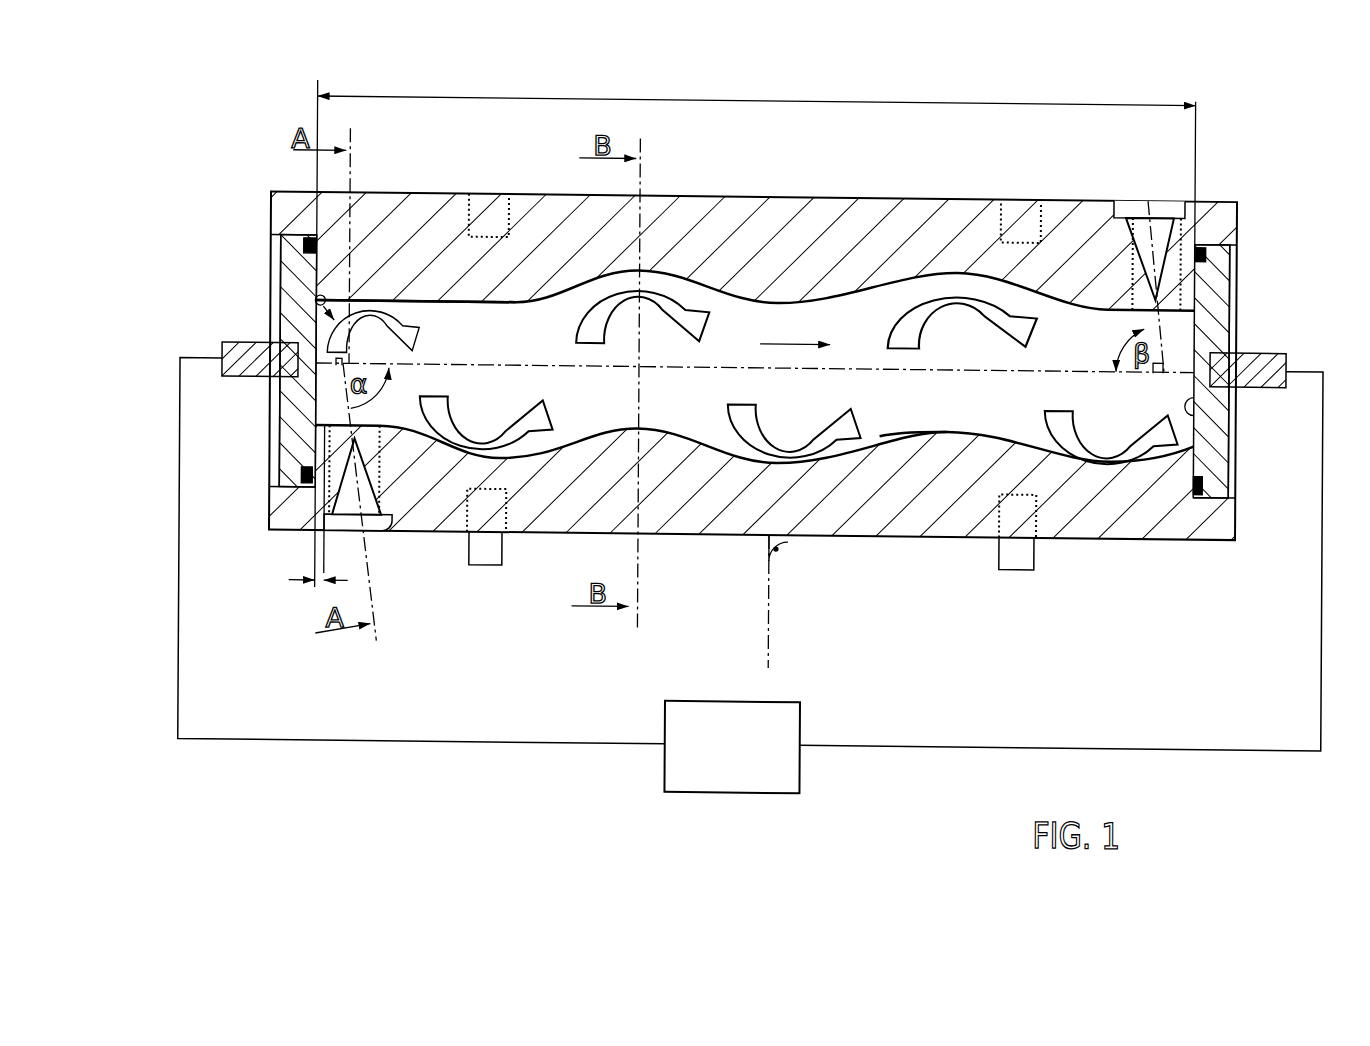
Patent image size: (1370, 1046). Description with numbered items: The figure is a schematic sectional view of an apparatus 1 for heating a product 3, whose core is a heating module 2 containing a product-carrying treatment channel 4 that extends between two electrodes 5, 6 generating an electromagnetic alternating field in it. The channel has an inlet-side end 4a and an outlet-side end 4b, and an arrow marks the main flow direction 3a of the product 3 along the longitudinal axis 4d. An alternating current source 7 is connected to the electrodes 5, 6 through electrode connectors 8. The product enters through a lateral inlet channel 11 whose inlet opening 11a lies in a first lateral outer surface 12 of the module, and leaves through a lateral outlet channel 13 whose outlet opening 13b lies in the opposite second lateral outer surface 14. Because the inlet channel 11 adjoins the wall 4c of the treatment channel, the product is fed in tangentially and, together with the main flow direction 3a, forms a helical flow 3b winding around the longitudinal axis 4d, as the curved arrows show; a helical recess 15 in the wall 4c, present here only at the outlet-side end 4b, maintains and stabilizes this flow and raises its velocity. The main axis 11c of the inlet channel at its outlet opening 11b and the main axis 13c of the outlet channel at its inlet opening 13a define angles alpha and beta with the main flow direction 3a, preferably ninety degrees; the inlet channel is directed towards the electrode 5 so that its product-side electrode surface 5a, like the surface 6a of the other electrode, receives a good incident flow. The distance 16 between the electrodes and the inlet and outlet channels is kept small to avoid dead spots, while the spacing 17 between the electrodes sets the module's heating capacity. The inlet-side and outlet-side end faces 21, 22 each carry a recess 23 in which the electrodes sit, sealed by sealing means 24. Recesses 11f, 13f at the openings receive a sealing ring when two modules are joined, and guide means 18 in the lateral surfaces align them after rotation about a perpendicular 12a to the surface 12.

The apparatus 1 is at (328, 763).
The heating module 2 is at (763, 217).
The product 3 is at (917, 402).
The main flow direction 3a is at (795, 331).
The helical flow 3b is at (793, 432).
The treatment channel 4 is at (443, 335).
The inlet-side end 4a is at (324, 379).
The outlet-side end 4b is at (1178, 343).
The wall 4c is at (528, 303).
The longitudinal axis 4d is at (697, 366).
The electrode 5 is at (287, 268).
The product-side electrode surface 5a is at (314, 300).
The electrode 6 is at (1220, 460).
The product-side electrode surface 6a is at (1196, 397).
The alternating current source 7 is at (742, 756).
The electrode connectors 8 is at (1274, 346).
The lateral inlet channel 11 is at (381, 467).
The inlet opening 11a is at (374, 540).
The outlet opening 11b is at (367, 425).
The main axis 11c is at (347, 405).
The recess 11f is at (389, 528).
The first lateral outer surface 12 is at (948, 533).
The perpendicular 12a is at (772, 583).
The lateral outlet channel 13 is at (1128, 253).
The inlet opening 13a is at (1136, 308).
The outlet opening 13b is at (1118, 188).
The main axis 13c is at (1156, 363).
The recess 13f is at (1180, 203).
The second lateral outer surface 14 is at (875, 188).
The helical recess 15 is at (902, 281).
The distance 16 is at (316, 582).
The spacing 17 is at (732, 96).
The guide means 18 is at (1044, 539).
The inlet-side end face 21 is at (268, 195).
The outlet-side end face 22 is at (1241, 212).
The recess 23 is at (1237, 243).
The sealing means 24 is at (1197, 230).